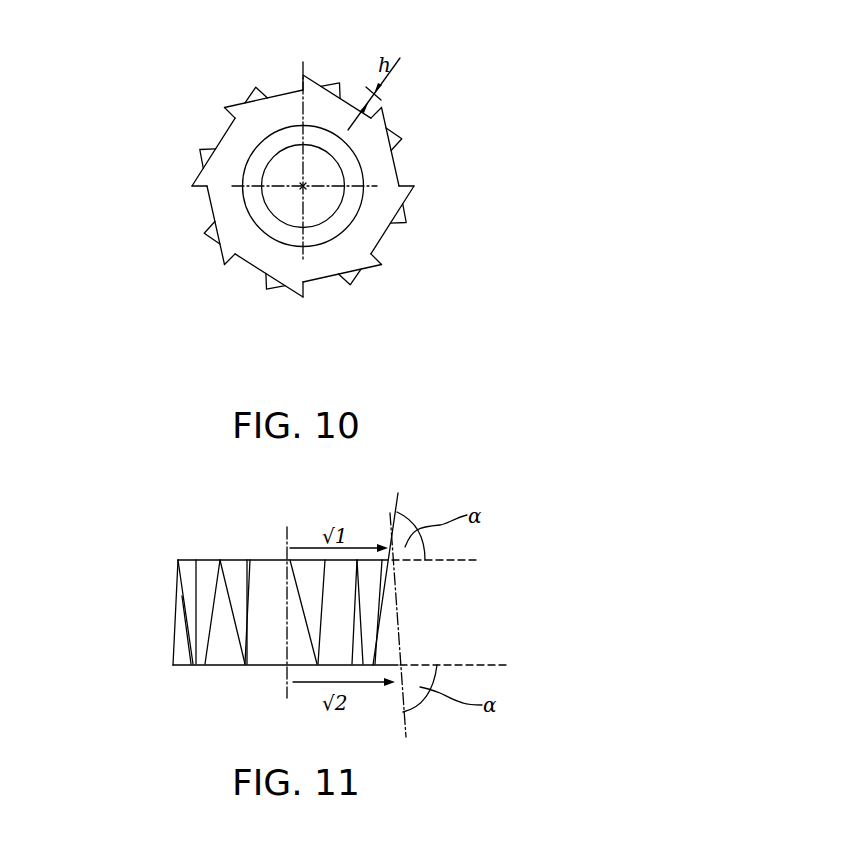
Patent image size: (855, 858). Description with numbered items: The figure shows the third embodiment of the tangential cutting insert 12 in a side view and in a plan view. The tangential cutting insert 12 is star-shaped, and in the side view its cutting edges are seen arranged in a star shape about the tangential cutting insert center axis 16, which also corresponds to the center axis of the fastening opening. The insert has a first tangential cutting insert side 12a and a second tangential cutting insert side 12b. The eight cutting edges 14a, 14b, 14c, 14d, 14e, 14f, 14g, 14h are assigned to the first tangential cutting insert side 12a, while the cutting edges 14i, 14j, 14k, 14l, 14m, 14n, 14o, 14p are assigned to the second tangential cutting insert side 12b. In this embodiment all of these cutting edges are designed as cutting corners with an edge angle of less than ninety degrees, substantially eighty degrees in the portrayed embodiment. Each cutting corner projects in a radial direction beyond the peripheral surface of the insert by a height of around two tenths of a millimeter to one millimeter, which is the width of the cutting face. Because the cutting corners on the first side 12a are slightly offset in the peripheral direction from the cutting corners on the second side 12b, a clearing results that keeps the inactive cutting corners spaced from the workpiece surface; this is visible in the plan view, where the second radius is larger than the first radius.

In FIG. 10, the tangential cutting insert 12 is at (370, 228).
In FIG. 11, the tangential cutting insert 12 is at (373, 606).
In FIG. 11, the first tangential cutting insert side 12a is at (197, 672).
In FIG. 11, the second tangential cutting insert side 12b is at (208, 553).
In FIG. 10, the cutting edge 14a is at (224, 107).
In FIG. 10, the cutting edge 14b is at (192, 186).
In FIG. 10, the cutting edge 14c is at (225, 265).
In FIG. 10, the cutting edge 14d is at (306, 297).
In FIG. 10, the cutting edge 14e is at (382, 265).
In FIG. 10, the cutting edge 14f is at (414, 186).
In FIG. 10, the cutting edge 14g is at (382, 108).
In FIG. 10, the cutting edge 14h is at (305, 76).
In FIG. 10, the cutting edge 14i is at (257, 86).
In FIG. 10, the cutting edge 14j is at (200, 149).
In FIG. 10, the cutting edge 14k is at (204, 232).
In FIG. 10, the cutting edge 14l is at (266, 290).
In FIG. 10, the cutting edge 14m is at (351, 286).
In FIG. 10, the cutting edge 14n is at (406, 223).
In FIG. 10, the cutting edge 14o is at (402, 139).
In FIG. 10, the cutting edge 14p is at (340, 84).
In FIG. 10, the tangential cutting insert center axis 16 is at (303, 188).